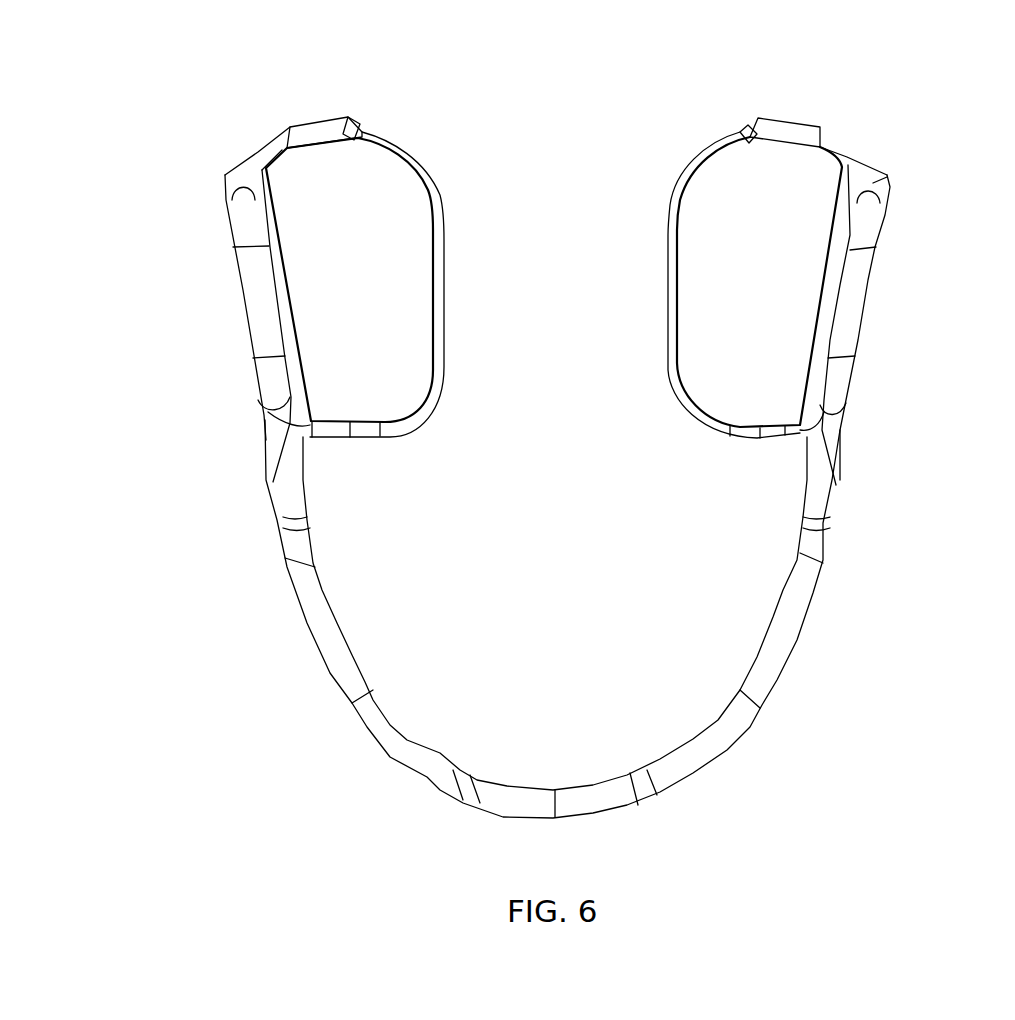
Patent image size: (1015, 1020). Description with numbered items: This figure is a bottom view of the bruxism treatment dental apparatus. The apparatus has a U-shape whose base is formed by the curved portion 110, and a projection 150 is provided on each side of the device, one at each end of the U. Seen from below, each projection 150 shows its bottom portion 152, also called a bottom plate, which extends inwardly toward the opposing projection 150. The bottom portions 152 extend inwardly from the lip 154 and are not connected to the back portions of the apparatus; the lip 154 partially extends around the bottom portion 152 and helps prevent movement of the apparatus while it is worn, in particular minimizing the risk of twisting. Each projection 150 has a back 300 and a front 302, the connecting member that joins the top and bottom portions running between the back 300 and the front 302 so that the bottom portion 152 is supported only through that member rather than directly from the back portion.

The back 300 is at (570, 246).
The projection 150 is at (570, 270).
The bottom portion 152 is at (400, 262).
The lip 154 is at (144, 352).
The front 302 is at (761, 549).
The curved portion 110 is at (717, 733).